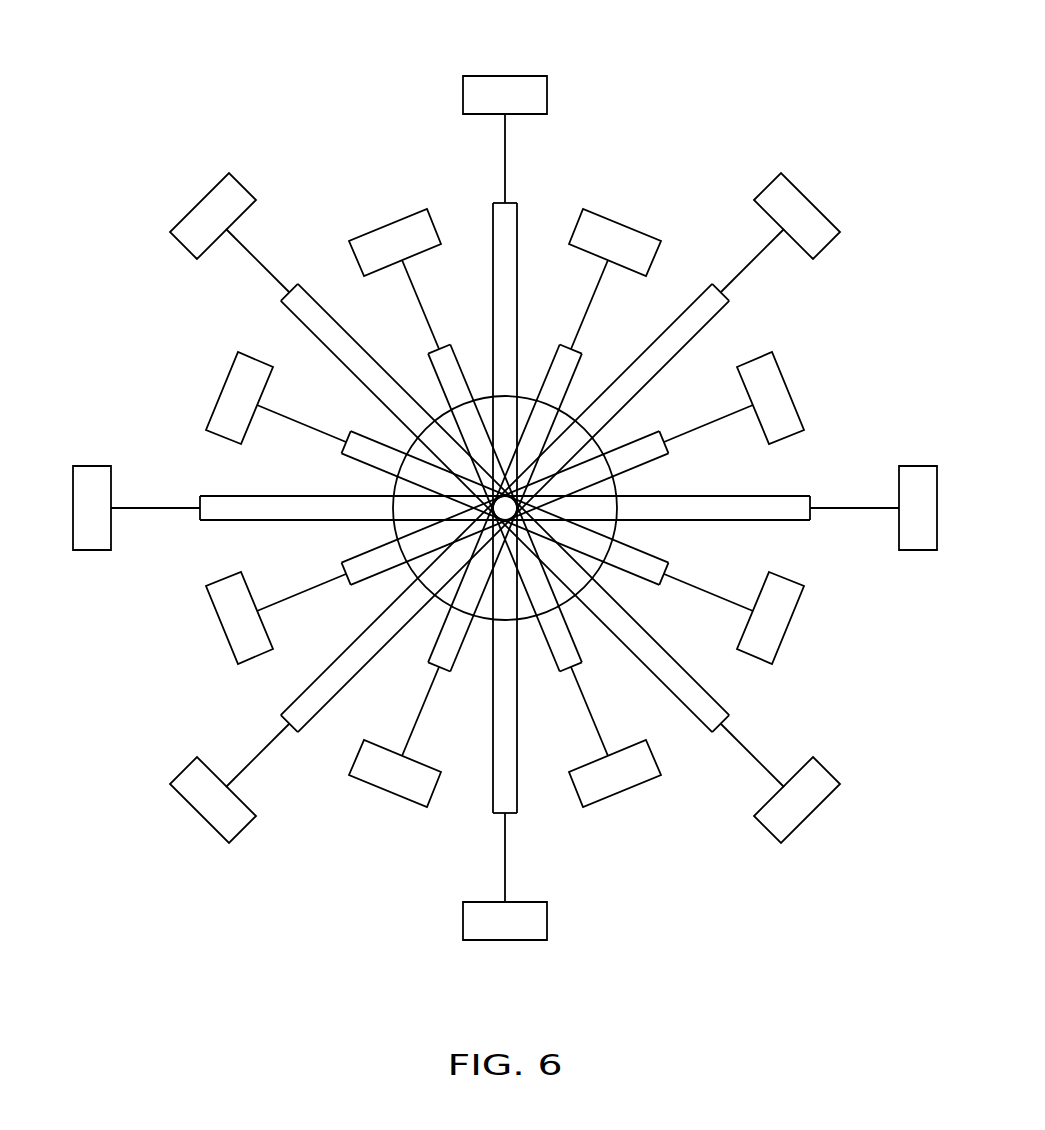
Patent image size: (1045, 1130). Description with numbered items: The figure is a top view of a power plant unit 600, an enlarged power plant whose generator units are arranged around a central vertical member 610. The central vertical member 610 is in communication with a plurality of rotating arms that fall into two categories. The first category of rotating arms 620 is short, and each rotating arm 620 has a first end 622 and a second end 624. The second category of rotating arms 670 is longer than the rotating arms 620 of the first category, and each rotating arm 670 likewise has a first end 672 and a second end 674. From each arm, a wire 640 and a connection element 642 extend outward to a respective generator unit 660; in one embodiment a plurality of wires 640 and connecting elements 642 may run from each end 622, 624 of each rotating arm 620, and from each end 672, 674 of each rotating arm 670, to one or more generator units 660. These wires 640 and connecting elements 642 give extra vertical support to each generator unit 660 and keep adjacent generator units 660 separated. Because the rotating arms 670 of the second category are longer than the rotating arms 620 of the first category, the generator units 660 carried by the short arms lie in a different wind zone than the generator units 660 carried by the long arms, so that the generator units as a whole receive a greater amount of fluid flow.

The power plant unit 600 is at (316, 942).
The central vertical member 610 is at (505, 506).
The rotating arm 620 is at (447, 373).
The first end 622 is at (430, 343).
The second end 624 is at (347, 430).
The wire 640 is at (505, 508).
The connection element 642 is at (506, 152).
The generator unit 660 is at (505, 74).
The rotating arm 670 is at (497, 222).
The first end 672 is at (717, 287).
The second end 674 is at (516, 206).